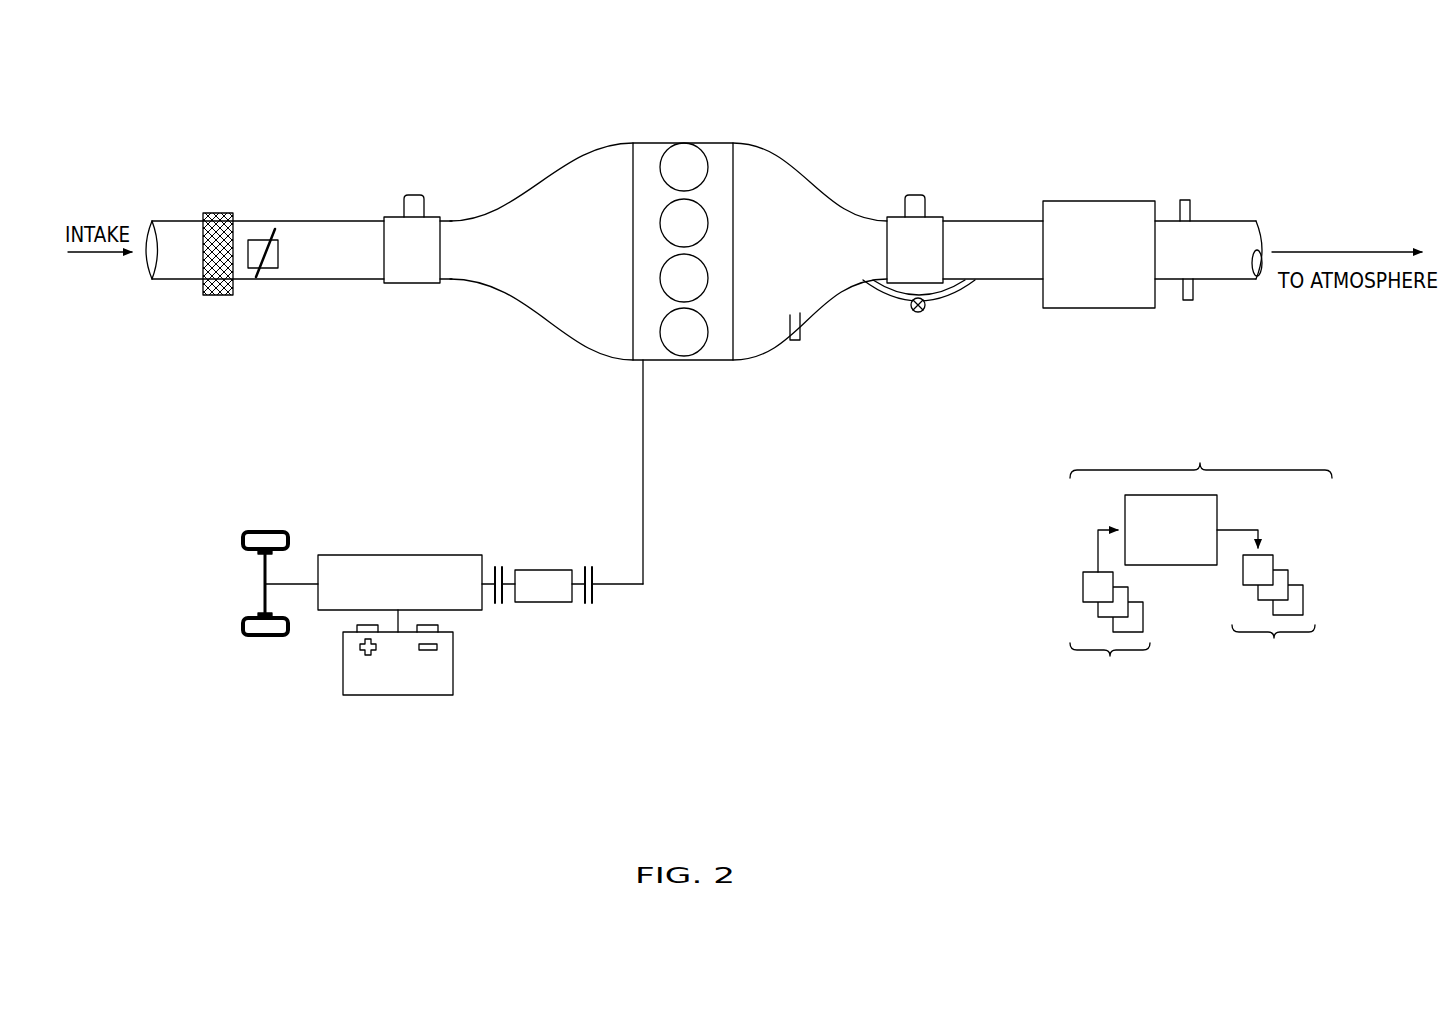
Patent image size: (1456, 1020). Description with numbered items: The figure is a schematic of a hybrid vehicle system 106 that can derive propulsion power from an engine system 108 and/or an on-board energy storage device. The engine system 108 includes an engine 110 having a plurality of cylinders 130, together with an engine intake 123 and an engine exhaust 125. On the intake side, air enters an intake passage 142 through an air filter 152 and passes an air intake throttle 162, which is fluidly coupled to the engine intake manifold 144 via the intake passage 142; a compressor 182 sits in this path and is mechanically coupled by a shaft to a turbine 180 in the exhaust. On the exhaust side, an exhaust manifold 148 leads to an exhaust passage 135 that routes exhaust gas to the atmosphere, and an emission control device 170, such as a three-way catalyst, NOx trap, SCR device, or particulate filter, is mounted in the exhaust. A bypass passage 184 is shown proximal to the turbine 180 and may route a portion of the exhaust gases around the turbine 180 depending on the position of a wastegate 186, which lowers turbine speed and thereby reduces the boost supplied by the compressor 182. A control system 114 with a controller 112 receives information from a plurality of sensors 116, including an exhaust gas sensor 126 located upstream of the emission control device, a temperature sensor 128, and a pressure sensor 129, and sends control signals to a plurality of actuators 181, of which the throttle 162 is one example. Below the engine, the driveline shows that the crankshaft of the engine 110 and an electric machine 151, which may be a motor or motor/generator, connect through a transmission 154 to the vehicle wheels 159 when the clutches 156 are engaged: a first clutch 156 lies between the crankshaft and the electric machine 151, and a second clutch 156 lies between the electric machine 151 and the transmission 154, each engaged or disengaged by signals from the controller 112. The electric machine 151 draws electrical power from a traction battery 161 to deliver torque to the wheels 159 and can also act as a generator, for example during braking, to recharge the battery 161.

The hybrid vehicle system 106 is at (170, 121).
The engine system 108 is at (1296, 114).
The engine 110 is at (734, 232).
The controller 112 is at (1171, 530).
The control system 114 is at (1201, 557).
The sensors 116 is at (1110, 634).
The engine intake 123 is at (548, 162).
The engine exhaust 125 is at (852, 177).
The exhaust gas sensor 126 is at (801, 322).
The temperature sensor 128 is at (1192, 300).
The pressure sensor 129 is at (1185, 200).
The cylinders 130 is at (706, 160).
The exhaust passage 135 is at (1243, 221).
The intake passage 142 is at (176, 281).
The engine intake manifold 144 is at (604, 262).
The exhaust manifold 148 is at (826, 262).
The electric machine 151 is at (544, 604).
The air filter 152 is at (222, 213).
The transmission 154 is at (344, 611).
The clutches 156 is at (503, 571).
The vehicle wheels 159 is at (263, 636).
The traction battery 161 is at (402, 697).
The air intake throttle 162 is at (278, 262).
The emission control device 170 is at (1085, 201).
The turbine 180 is at (931, 262).
The actuators 181 is at (424, 198).
The compressor 182 is at (429, 262).
The bypass passage 184 is at (876, 300).
The wastegate 186 is at (922, 313).